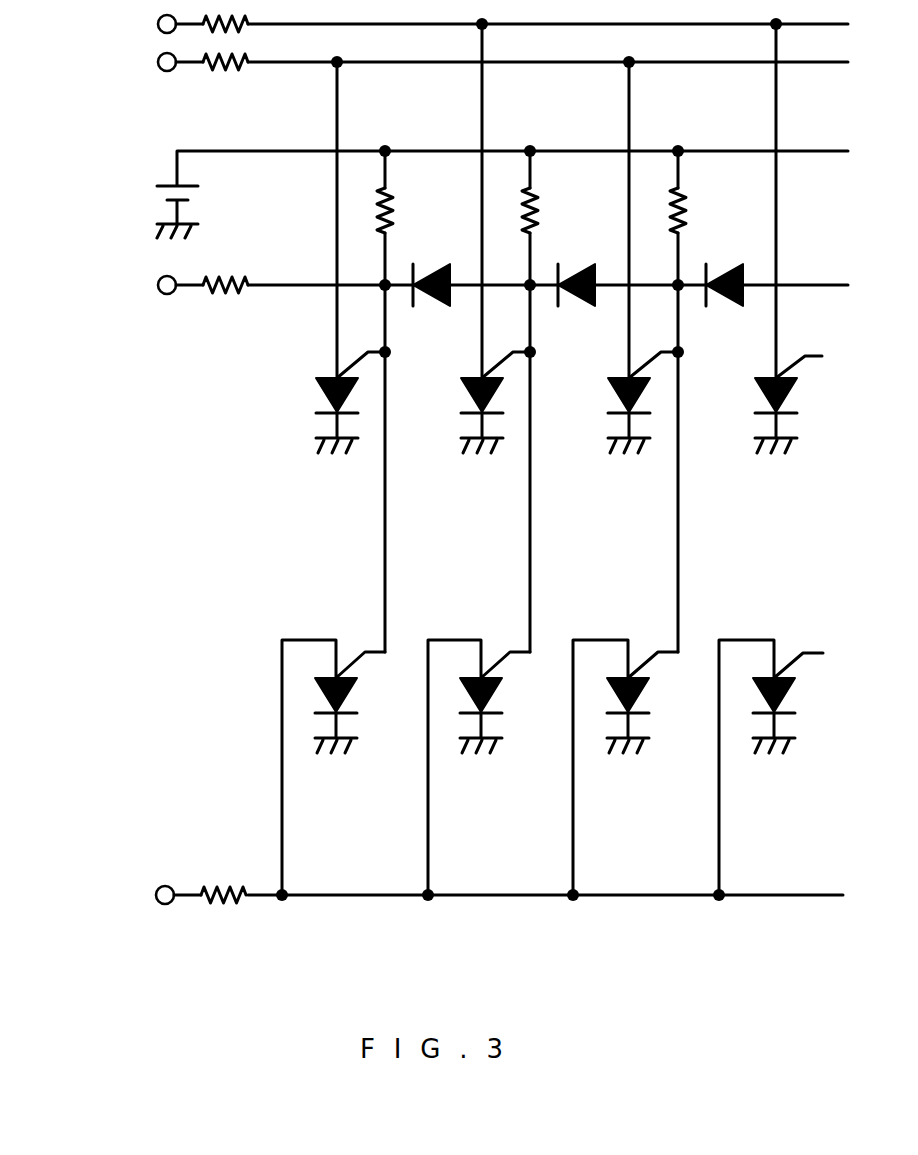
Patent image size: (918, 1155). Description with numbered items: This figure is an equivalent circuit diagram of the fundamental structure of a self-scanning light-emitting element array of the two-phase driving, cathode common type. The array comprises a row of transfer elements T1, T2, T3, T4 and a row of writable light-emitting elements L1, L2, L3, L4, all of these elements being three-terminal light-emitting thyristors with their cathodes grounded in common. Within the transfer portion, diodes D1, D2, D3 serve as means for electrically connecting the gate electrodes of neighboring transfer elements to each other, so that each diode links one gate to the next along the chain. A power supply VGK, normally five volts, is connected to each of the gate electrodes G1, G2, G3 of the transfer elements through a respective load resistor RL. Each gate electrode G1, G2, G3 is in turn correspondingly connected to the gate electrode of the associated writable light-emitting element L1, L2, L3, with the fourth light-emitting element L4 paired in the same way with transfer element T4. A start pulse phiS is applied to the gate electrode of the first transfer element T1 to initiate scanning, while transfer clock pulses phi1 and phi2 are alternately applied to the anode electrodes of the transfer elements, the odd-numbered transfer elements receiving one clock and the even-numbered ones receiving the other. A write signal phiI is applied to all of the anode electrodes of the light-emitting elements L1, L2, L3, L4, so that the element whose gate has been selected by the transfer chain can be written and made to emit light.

The transfer clock pulse phi1 is at (155, 24).
The transfer clock pulse phi2 is at (155, 62).
The power supply VGK is at (155, 192).
The start pulse phiS is at (155, 285).
The write signal phiI is at (153, 895).
The load resistor RL is at (407, 209).
The diode D1 is at (430, 312).
The diode D2 is at (575, 312).
The diode D3 is at (723, 312).
The gate electrode G1 is at (346, 364).
The gate electrode G2 is at (491, 364).
The gate electrode G3 is at (639, 364).
The transfer element T1 is at (312, 394).
The transfer element T2 is at (457, 394).
The transfer element T3 is at (604, 394).
The transfer element T4 is at (751, 394).
The writable light-emitting element L1 is at (355, 694).
The writable light-emitting element L2 is at (500, 694).
The writable light-emitting element L3 is at (647, 694).
The writable light-emitting element L4 is at (793, 694).